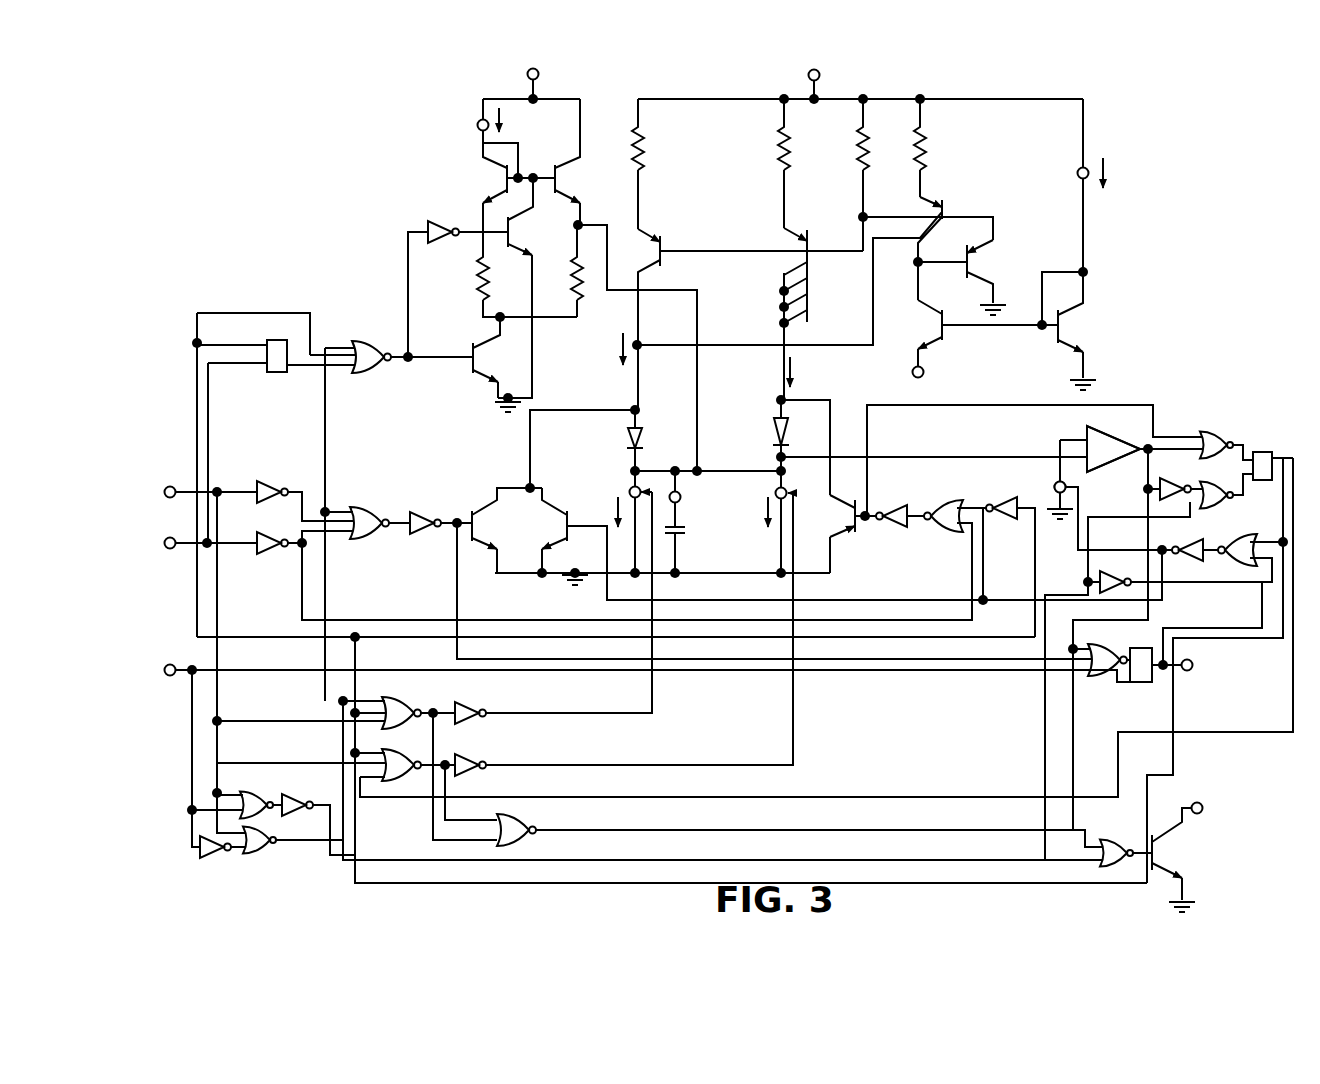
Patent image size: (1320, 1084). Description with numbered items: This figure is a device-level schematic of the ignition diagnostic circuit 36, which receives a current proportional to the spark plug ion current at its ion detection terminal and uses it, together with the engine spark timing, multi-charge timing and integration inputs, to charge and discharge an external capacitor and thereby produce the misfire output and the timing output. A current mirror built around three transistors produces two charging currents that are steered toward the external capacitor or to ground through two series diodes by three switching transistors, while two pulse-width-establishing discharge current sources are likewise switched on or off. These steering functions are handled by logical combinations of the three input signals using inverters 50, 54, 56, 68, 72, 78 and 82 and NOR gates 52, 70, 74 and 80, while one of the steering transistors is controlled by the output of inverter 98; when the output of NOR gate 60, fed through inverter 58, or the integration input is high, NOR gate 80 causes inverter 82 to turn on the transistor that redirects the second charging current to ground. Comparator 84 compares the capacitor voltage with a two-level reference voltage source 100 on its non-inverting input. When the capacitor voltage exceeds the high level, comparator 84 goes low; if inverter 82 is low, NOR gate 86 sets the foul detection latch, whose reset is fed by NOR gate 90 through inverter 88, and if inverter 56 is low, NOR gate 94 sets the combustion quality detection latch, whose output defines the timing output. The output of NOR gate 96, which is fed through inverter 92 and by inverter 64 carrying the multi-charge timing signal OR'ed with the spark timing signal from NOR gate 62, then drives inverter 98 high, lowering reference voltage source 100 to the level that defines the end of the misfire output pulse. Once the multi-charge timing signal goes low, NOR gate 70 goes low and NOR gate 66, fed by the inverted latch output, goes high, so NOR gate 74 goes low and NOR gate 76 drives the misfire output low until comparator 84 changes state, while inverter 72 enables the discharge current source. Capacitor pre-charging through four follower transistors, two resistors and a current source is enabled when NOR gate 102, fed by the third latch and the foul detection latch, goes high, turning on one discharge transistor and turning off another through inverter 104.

The ignition diagnostic circuit 36 is at (703, 492).
The inverter 50 is at (268, 481).
The NOR gate 52 is at (360, 508).
The inverter 54 is at (268, 556).
The inverter 56 is at (422, 513).
The inverter 58 is at (212, 859).
The NOR gate 60 is at (258, 853).
The NOR gate 62 is at (253, 792).
The inverter 64 is at (297, 818).
The NOR gate 66 is at (402, 781).
The inverter 68 is at (466, 755).
The NOR gate 70 is at (400, 698).
The inverter 72 is at (466, 703).
The NOR gate 74 is at (522, 848).
The NOR gate 76 is at (1122, 841).
The inverter 78 is at (1005, 521).
The NOR gate 80 is at (945, 536).
The inverter 82 is at (891, 529).
The comparator 84 is at (1106, 466).
The NOR gate 86 is at (1212, 432).
The inverter 88 is at (1176, 478).
The NOR gate 90 is at (1228, 505).
The inverter 92 is at (1115, 570).
The NOR gate 94 is at (1100, 678).
The NOR gate 96 is at (1246, 537).
The inverter 98 is at (1192, 563).
The reference voltage source 100 is at (1054, 487).
The NOR gate 102 is at (365, 340).
The inverter 104 is at (426, 227).